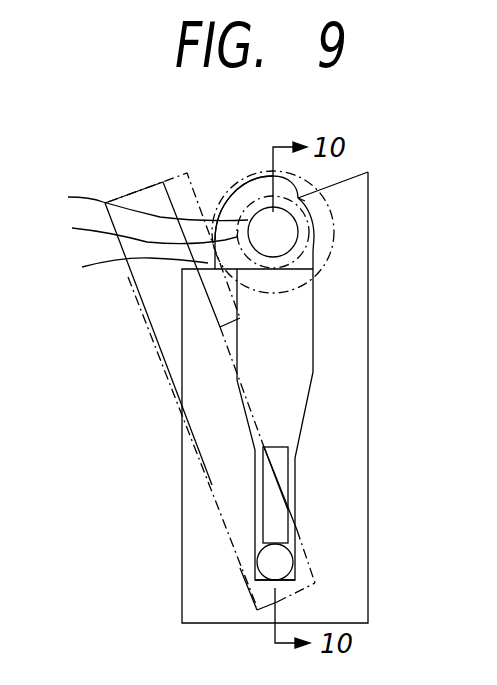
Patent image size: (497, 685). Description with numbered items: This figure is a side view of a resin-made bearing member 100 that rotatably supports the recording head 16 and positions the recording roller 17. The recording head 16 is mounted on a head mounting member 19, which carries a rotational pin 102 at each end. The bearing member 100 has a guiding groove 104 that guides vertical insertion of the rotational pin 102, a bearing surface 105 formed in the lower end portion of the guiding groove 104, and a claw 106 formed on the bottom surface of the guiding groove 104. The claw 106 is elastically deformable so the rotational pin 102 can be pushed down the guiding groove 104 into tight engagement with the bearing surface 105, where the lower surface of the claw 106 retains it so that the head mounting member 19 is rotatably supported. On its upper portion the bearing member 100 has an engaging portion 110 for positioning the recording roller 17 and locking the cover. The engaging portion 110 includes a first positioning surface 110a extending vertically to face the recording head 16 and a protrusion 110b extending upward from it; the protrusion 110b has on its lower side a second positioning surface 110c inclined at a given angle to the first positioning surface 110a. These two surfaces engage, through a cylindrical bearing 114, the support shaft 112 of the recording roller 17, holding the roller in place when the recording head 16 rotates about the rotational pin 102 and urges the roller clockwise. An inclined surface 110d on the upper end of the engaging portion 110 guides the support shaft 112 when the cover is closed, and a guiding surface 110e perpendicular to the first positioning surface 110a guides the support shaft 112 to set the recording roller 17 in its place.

The recording head 16 is at (167, 175).
The recording roller 17 is at (253, 178).
The head mounting member 19 is at (140, 309).
The bearing member 100 is at (165, 470).
The rotational pin 102 is at (295, 539).
The guiding groove 104 is at (298, 375).
The bearing surface 105 is at (293, 581).
The claw 106 is at (289, 469).
The engaging portion 110 is at (355, 317).
The first positioning surface 110a is at (313, 245).
The protrusion 110b is at (318, 202).
The second positioning surface 110c is at (298, 199).
The inclined surface 110d is at (358, 167).
The guiding surface 110e is at (119, 267).
The support shaft 112 is at (138, 199).
The cylindrical bearing 114 is at (135, 228).